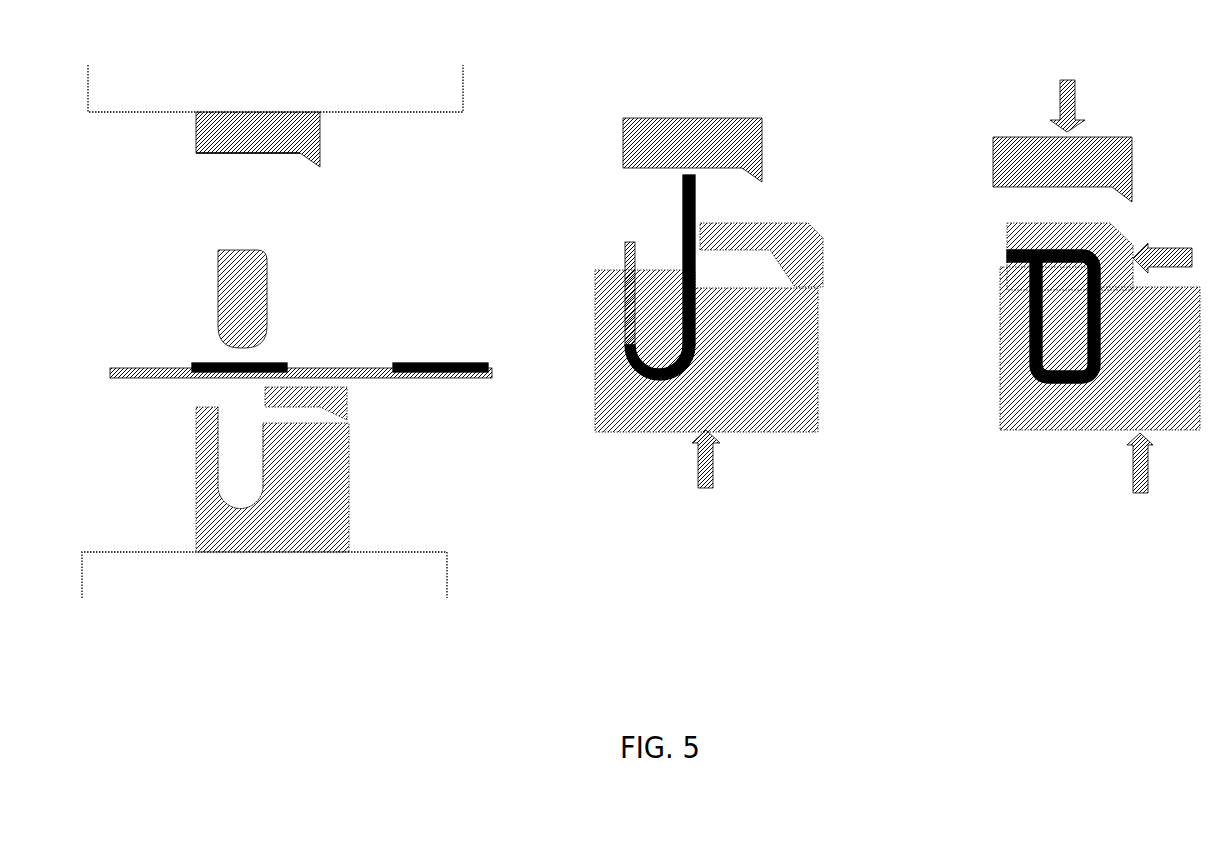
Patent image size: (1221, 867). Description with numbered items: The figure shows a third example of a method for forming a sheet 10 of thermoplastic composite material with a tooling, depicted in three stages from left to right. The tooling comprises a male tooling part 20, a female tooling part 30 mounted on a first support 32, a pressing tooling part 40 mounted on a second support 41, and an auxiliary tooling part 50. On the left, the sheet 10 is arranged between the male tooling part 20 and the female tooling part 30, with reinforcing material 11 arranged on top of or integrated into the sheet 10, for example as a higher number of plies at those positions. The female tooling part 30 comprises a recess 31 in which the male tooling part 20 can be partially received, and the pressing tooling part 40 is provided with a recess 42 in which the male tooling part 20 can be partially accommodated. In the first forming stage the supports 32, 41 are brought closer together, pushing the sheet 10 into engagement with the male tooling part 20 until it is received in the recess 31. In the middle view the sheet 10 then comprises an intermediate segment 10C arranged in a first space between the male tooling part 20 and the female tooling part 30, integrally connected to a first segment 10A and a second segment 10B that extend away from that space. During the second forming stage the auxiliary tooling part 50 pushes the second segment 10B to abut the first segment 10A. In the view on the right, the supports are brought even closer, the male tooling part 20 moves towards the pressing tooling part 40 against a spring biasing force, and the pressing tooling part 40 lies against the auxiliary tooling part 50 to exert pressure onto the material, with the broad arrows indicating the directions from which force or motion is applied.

The sheet 10 is at (378, 368).
The first segment 10A is at (630, 268).
The second segment 10B is at (692, 205).
The intermediate segment 10C is at (662, 378).
The reinforcing material 11 is at (268, 370).
The male tooling part 20 is at (230, 290).
The female tooling part 30 is at (333, 483).
The recess 31 is at (240, 493).
The first support 32 is at (388, 573).
The pressing tooling part 40 is at (263, 133).
The second support 41 is at (418, 88).
The recess 42 is at (212, 155).
The auxiliary tooling part 50 is at (343, 407).